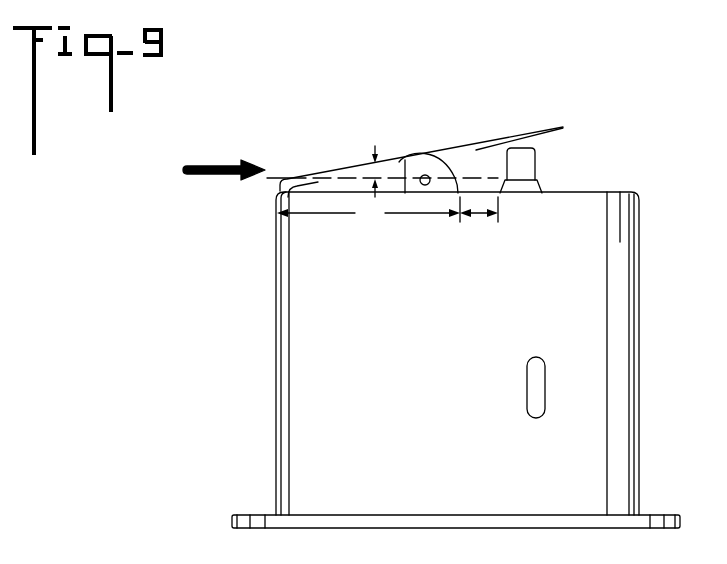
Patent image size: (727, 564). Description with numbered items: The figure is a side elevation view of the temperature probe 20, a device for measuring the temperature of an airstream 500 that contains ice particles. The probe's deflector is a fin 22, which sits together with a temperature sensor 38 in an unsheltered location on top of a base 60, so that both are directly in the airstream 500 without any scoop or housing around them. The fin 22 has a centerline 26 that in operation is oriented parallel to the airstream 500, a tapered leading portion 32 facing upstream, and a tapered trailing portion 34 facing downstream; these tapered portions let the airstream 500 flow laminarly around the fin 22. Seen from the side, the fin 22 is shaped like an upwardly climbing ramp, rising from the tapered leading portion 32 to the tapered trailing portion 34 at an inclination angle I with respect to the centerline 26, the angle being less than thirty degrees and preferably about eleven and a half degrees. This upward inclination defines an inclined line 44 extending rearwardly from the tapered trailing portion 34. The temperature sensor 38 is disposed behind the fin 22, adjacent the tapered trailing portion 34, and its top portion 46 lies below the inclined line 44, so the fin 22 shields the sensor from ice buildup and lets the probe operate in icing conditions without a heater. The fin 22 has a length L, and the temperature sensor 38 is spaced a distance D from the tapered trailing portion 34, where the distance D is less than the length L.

The temperature probe 20 is at (604, 90).
The fin 22 is at (342, 144).
The centerline 26 is at (279, 178).
The tapered leading portion 32 is at (285, 192).
The tapered trailing portion 34 is at (442, 167).
The temperature sensor 38 is at (527, 167).
The inclined line 44 is at (533, 135).
The top portion 46 is at (535, 150).
The base 60 is at (260, 283).
The airstream 500 is at (205, 165).
The inclination angle I is at (378, 172).
The length L is at (368, 212).
The distance D is at (480, 214).